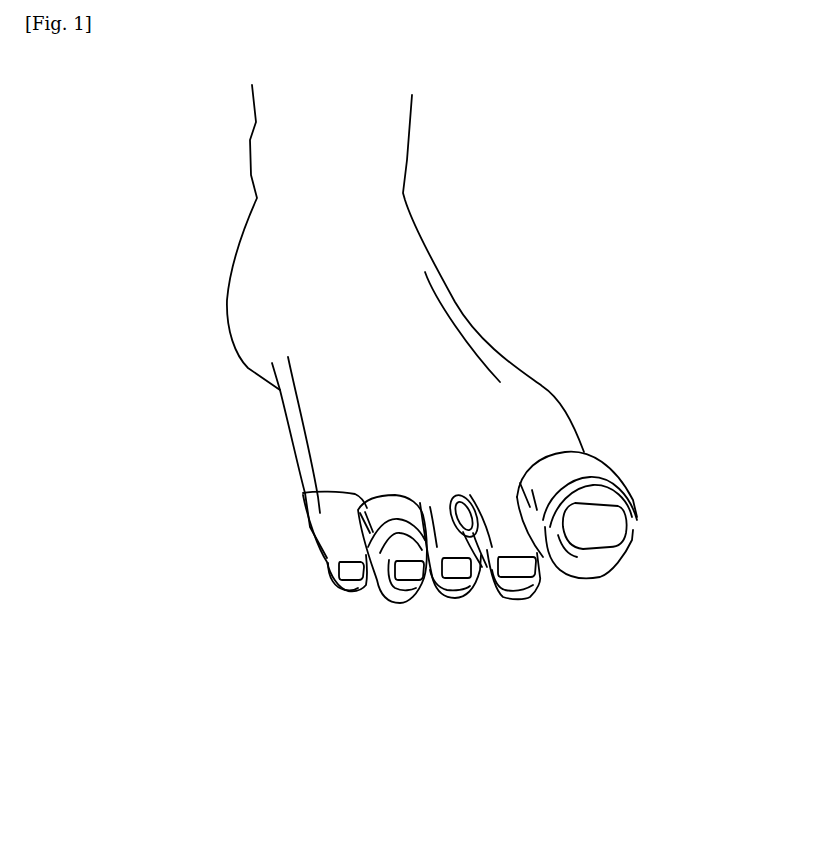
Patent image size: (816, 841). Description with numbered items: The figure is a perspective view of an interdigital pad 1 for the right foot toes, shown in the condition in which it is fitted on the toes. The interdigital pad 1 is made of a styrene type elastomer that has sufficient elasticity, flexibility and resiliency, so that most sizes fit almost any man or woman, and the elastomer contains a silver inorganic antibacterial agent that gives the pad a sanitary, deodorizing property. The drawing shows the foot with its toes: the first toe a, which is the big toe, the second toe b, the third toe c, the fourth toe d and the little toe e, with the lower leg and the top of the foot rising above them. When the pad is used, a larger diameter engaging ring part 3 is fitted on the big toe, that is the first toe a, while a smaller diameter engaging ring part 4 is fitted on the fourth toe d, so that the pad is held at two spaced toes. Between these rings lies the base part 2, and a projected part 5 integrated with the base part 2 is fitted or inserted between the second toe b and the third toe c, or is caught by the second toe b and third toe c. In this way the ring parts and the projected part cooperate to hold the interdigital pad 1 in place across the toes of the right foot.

The interdigital pad 1 is at (655, 491).
The base part 2 is at (477, 582).
The larger diameter engaging ring part 3 is at (597, 462).
The smaller diameter engaging ring part 4 is at (303, 493).
The projected part 5 is at (454, 497).
The first toe a is at (618, 560).
The second toe b is at (530, 598).
The third toe c is at (455, 600).
The fourth toe d is at (397, 600).
The little toe e is at (325, 582).